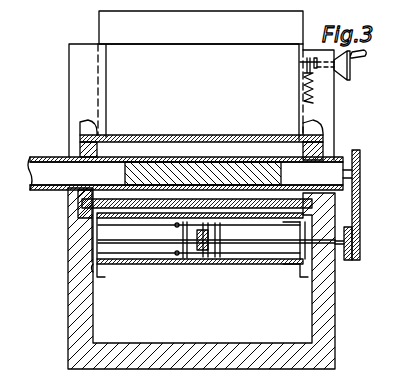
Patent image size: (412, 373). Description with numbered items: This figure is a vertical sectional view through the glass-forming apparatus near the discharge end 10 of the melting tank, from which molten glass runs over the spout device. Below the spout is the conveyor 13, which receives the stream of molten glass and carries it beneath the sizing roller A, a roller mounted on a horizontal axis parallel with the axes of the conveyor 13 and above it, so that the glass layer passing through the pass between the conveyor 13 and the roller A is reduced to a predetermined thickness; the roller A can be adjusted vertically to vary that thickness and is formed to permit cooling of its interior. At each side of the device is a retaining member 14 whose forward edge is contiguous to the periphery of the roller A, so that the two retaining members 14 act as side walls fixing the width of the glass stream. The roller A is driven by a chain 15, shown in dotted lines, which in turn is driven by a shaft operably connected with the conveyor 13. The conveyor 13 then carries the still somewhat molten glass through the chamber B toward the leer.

The discharge end of tank 10 is at (217, 167).
The conveyor 13 is at (147, 262).
The retaining member 14 is at (78, 128).
The chain 15 is at (358, 224).
The sizing roller A is at (153, 176).
The chamber B is at (201, 278).